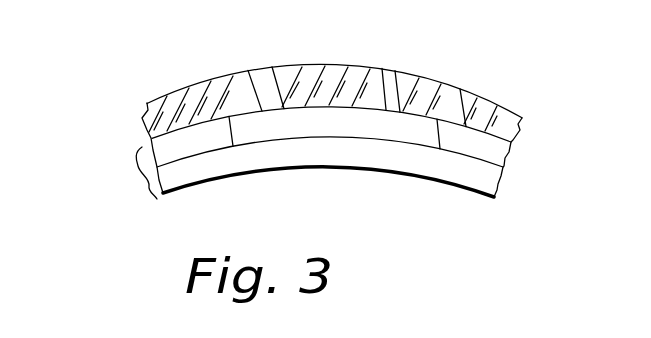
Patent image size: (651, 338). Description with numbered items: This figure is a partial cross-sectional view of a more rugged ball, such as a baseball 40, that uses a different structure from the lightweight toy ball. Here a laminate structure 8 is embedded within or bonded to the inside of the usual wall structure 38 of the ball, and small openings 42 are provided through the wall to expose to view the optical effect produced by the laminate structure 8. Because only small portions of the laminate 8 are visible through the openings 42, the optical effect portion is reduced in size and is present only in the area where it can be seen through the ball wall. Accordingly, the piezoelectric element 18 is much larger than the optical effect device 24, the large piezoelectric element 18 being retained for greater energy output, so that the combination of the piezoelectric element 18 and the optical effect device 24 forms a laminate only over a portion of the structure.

The baseball 40 is at (75, 129).
The optical effect device 24 is at (307, 119).
The small openings 42 is at (259, 89).
The wall structure 38 is at (523, 128).
The piezoelectric element 18 is at (498, 195).
The laminate structure 8 is at (138, 179).